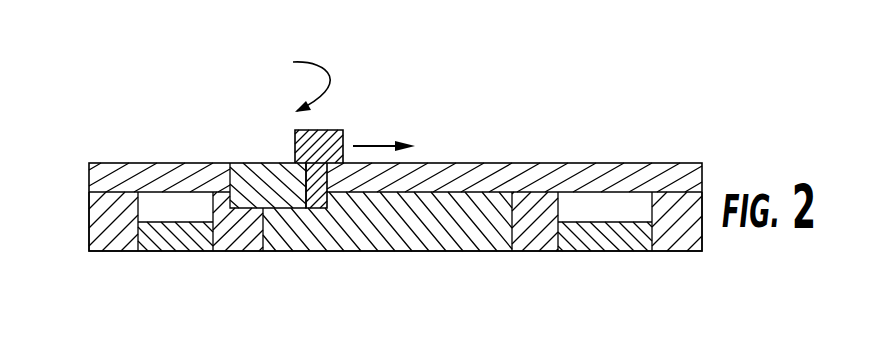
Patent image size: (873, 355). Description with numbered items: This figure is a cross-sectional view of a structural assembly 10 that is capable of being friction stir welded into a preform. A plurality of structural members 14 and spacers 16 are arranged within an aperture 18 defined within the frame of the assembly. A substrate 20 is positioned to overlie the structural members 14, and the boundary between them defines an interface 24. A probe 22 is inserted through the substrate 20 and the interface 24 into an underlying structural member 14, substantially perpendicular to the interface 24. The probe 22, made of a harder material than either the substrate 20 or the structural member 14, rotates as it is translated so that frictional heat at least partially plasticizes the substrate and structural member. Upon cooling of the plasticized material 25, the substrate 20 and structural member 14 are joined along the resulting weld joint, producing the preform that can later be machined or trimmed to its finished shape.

The structural assembly 10 is at (696, 108).
The structural member 14 is at (537, 213).
The spacer 16 is at (600, 232).
The aperture 18 is at (147, 192).
The substrate 20 is at (103, 175).
The probe 22 is at (337, 130).
The interface 24 is at (415, 225).
The plasticized material 25 is at (270, 180).